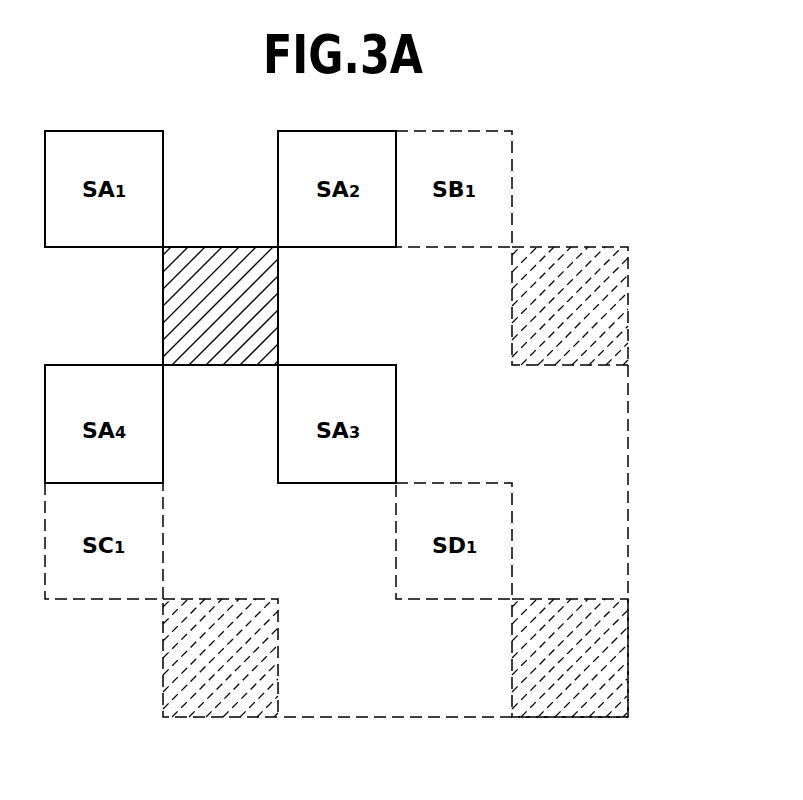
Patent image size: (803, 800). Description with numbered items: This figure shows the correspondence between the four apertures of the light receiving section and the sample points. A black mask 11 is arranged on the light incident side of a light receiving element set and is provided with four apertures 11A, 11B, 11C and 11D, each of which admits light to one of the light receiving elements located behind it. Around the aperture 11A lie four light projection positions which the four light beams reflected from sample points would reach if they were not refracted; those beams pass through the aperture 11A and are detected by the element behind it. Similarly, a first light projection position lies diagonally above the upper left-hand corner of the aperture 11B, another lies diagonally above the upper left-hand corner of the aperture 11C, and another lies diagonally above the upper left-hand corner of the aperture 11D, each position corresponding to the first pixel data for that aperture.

The black mask 11 is at (628, 458).
The aperture 11A is at (176, 316).
The aperture 11B is at (620, 284).
The aperture 11C is at (176, 670).
The aperture 11D is at (617, 668).